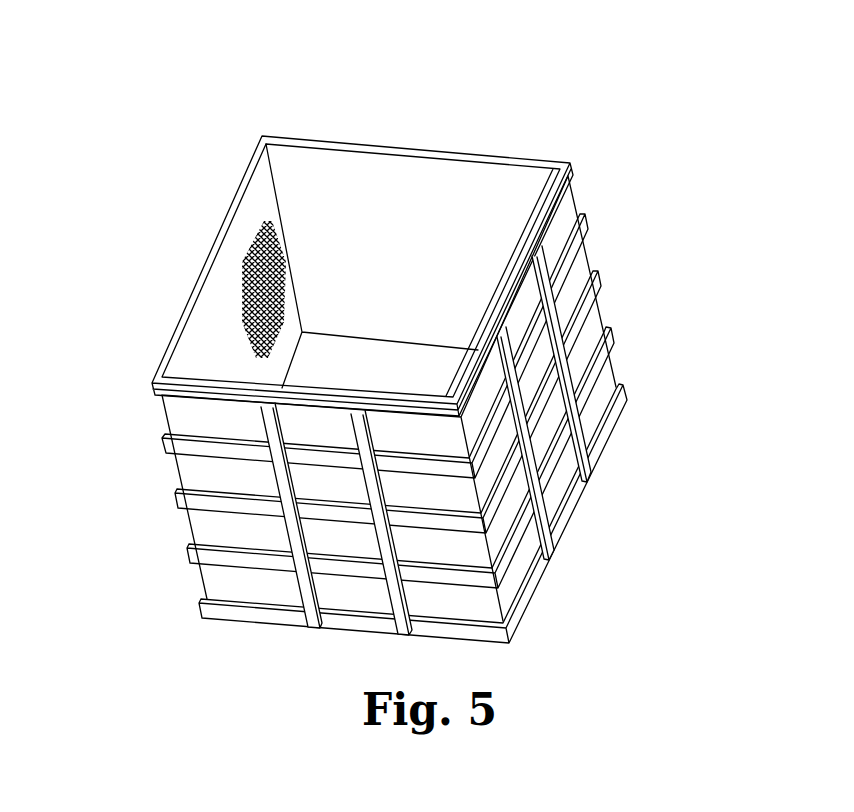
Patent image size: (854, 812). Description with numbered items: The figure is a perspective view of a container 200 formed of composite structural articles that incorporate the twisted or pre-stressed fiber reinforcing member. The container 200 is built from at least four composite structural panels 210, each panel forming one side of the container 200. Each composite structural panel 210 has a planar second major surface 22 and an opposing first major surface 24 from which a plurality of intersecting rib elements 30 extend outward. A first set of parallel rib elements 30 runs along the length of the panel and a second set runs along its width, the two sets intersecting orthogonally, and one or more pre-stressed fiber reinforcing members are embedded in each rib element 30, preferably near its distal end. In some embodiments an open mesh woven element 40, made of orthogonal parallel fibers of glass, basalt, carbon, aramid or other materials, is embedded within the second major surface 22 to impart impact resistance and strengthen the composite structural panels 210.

The container 200 is at (452, 83).
The composite structural panel 210 is at (190, 298).
The second major surface 22 is at (333, 163).
The first major surface 24 is at (595, 383).
The rib element 30 is at (600, 307).
The open mesh woven element 40 is at (290, 288).